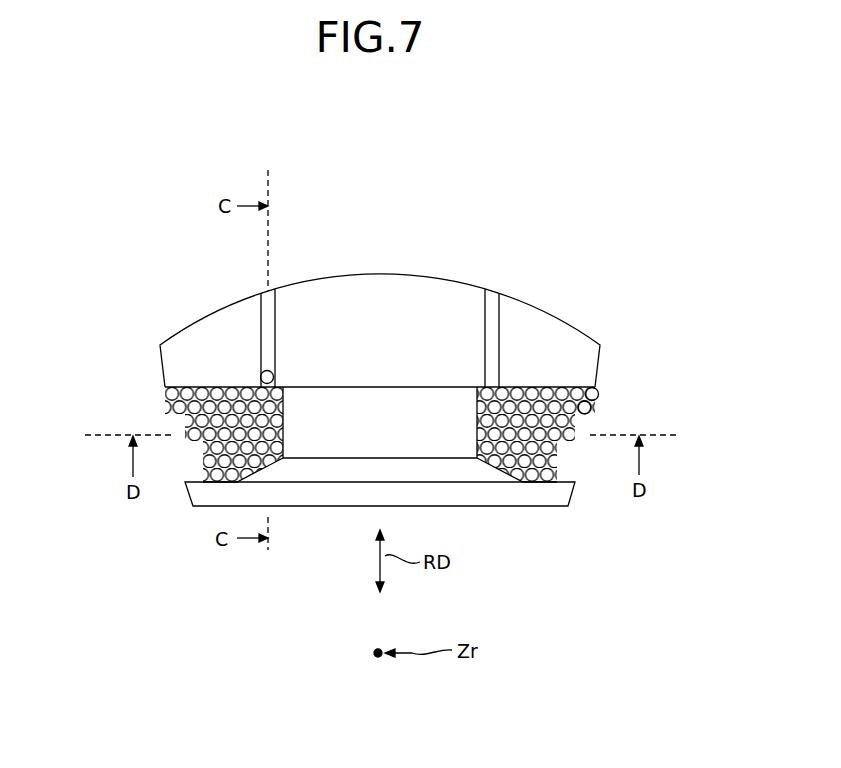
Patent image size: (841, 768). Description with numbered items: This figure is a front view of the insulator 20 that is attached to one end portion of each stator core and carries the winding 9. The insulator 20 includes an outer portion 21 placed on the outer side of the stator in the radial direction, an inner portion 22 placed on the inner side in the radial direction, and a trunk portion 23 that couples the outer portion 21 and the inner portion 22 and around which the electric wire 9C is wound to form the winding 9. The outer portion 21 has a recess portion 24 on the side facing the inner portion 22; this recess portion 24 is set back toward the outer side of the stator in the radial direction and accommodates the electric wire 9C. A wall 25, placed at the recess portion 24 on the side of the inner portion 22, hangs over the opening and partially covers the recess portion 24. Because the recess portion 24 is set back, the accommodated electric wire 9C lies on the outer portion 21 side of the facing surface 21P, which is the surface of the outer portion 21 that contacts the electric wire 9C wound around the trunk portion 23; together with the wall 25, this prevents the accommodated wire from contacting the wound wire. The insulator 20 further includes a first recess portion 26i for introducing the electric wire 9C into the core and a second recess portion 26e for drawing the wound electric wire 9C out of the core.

The insulator 20 is at (134, 186).
The outer portion 21 is at (423, 296).
The facing surface 21P is at (336, 400).
The inner portion 22 is at (535, 500).
The trunk portion 23 is at (365, 423).
The recess portion 24 is at (261, 377).
The wall 25 is at (285, 386).
The first recess portion 26i is at (266, 302).
The second recess portion 26e is at (490, 297).
The winding 9 is at (596, 425).
The electric wire 9C is at (273, 373).